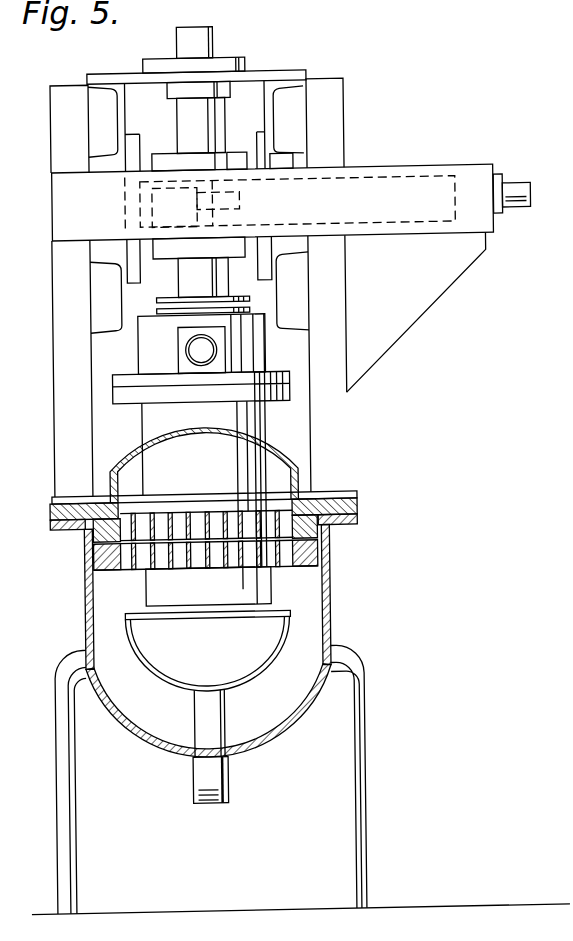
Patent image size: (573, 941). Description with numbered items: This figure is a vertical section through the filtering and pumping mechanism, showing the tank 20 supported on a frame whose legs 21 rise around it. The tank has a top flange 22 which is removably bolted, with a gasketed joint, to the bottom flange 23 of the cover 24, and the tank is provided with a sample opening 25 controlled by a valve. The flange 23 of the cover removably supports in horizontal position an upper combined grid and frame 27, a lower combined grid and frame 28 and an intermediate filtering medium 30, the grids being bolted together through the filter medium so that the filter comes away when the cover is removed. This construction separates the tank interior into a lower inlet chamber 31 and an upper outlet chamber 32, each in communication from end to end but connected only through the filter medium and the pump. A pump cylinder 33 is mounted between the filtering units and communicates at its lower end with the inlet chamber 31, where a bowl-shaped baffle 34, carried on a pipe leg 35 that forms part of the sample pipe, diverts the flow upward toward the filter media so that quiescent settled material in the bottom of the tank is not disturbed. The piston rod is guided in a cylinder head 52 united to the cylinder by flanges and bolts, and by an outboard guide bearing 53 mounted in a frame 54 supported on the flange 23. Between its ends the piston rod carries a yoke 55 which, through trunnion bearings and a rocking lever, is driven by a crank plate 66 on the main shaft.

The tank 20 is at (329, 608).
The legs 21 is at (362, 786).
The top flange 22 is at (347, 523).
The bottom flange 23 is at (357, 503).
The cover 24 is at (293, 449).
The sample opening 25 is at (224, 782).
The upper combined grid and frame 27 is at (222, 517).
The lower combined grid and frame 28 is at (208, 587).
The filtering medium 30 is at (289, 572).
The inlet chamber 31 is at (209, 712).
The outlet chamber 32 is at (204, 441).
The pump cylinder 33 is at (201, 400).
The bowl-shaped baffle 34 is at (208, 651).
The pipe leg 35 is at (225, 719).
The cylinder head 52 is at (202, 344).
The guide bearing 53 is at (222, 57).
The frame 54 is at (332, 120).
The yoke 55 is at (239, 153).
The crank plate 66 is at (225, 120).